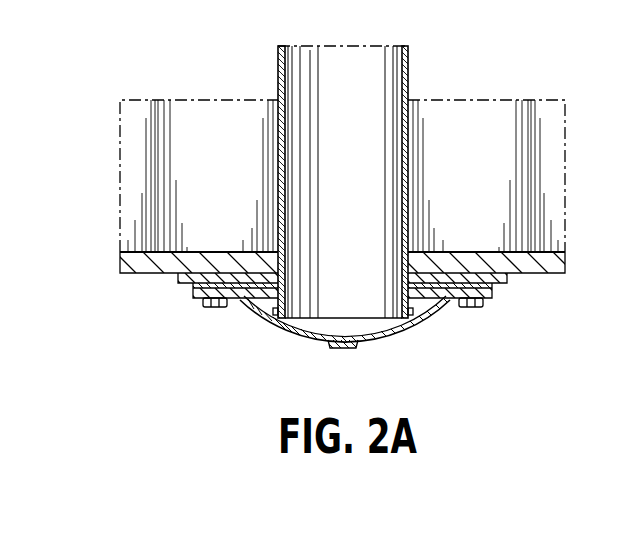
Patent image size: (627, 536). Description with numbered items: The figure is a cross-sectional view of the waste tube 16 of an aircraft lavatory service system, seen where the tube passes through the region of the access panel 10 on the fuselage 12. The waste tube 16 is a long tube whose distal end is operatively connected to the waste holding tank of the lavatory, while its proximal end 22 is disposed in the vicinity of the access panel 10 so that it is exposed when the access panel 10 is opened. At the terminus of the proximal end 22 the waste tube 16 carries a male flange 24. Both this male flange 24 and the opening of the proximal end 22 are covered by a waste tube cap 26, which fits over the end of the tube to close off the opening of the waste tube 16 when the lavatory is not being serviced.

The access panel 10 is at (140, 275).
The fuselage 12 is at (565, 172).
The waste tube 16 is at (408, 73).
The proximal end 22 is at (280, 336).
The male flange 24 is at (443, 306).
The waste tube cap 26 is at (318, 348).